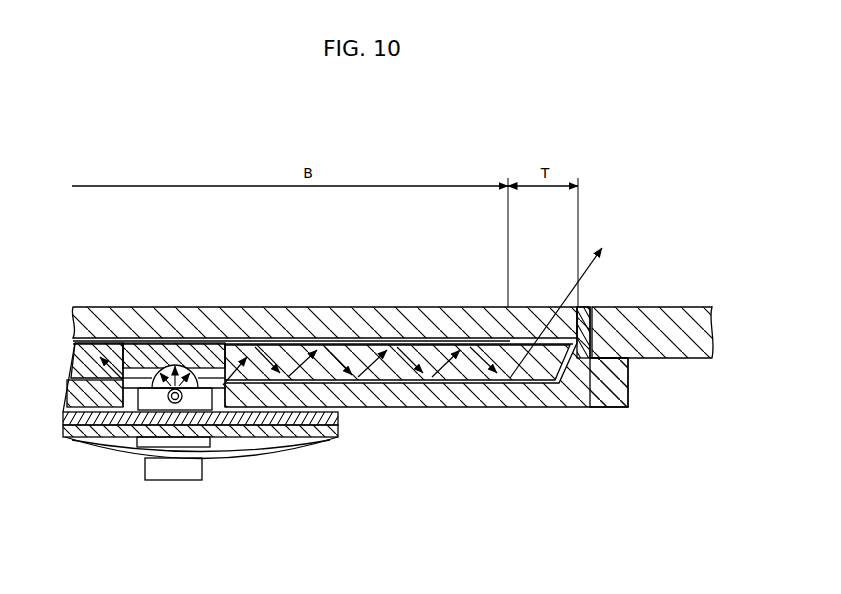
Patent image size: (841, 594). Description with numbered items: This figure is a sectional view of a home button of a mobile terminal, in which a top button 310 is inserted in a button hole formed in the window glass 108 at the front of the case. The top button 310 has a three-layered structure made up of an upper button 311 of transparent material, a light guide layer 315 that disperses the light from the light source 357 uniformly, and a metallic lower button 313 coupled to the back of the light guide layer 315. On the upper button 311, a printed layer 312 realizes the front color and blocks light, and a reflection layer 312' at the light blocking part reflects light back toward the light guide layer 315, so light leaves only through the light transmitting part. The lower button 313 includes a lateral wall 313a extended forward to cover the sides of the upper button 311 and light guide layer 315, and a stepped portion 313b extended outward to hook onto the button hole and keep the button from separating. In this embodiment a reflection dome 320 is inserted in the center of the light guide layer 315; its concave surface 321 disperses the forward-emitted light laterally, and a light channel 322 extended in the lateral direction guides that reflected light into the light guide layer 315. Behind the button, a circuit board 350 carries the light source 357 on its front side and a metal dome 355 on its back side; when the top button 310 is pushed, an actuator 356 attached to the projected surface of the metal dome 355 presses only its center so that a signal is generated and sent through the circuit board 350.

The window glass 108 is at (683, 317).
The top button 310 is at (260, 249).
The upper button 311 is at (337, 317).
The printed layer 312 is at (291, 296).
The reflection layer 312' is at (323, 298).
The lower button 313 is at (483, 393).
The lateral wall 313a is at (580, 306).
The stepped portion 313b is at (615, 375).
The light guide layer 315 is at (273, 355).
The reflection dome 320 is at (118, 249).
The concave surface 321 is at (190, 366).
The light channel 322 is at (144, 380).
The circuit board 350 is at (333, 437).
The metal dome 355 is at (245, 450).
The actuator 356 is at (175, 480).
The light source 357 is at (142, 403).